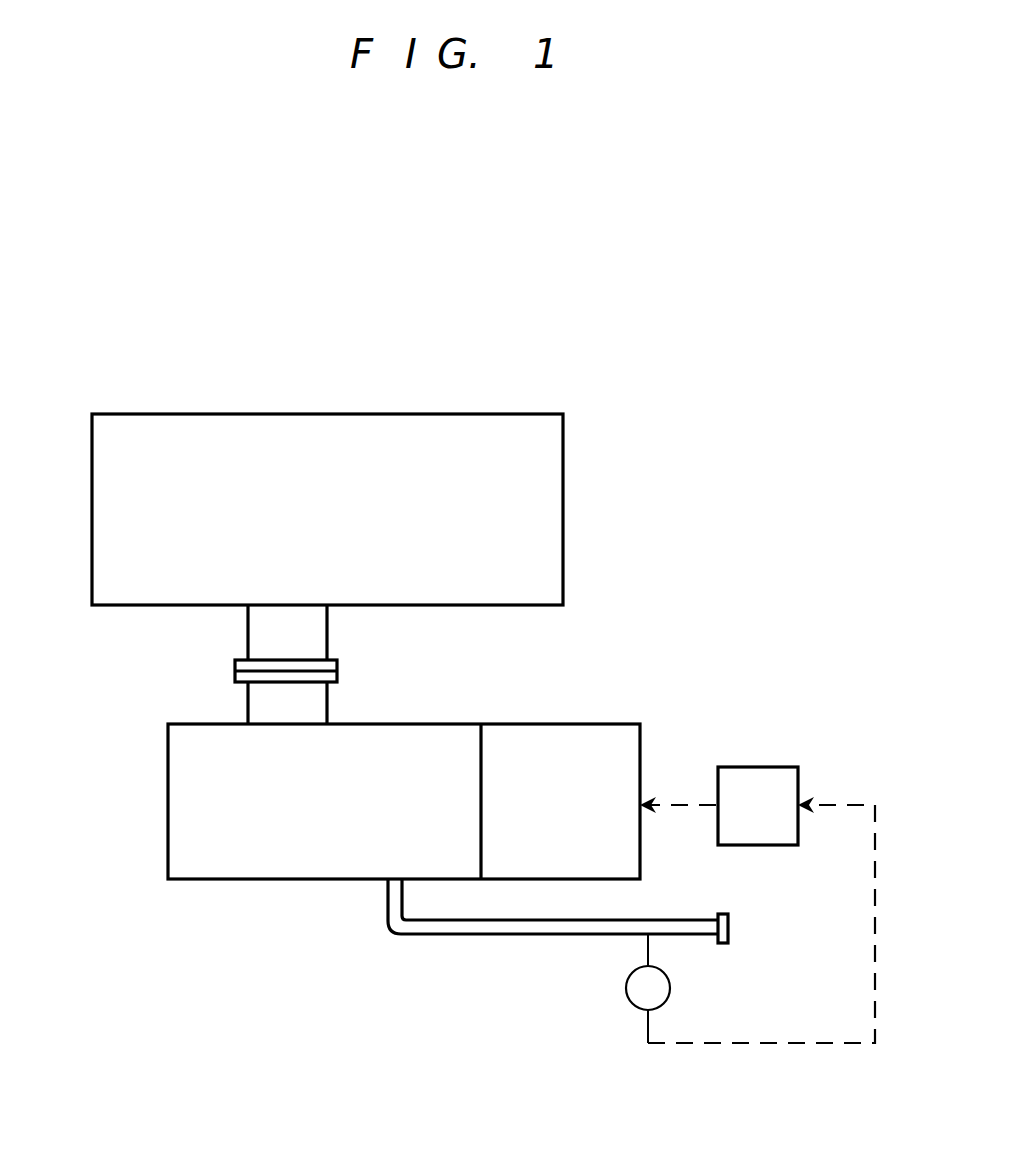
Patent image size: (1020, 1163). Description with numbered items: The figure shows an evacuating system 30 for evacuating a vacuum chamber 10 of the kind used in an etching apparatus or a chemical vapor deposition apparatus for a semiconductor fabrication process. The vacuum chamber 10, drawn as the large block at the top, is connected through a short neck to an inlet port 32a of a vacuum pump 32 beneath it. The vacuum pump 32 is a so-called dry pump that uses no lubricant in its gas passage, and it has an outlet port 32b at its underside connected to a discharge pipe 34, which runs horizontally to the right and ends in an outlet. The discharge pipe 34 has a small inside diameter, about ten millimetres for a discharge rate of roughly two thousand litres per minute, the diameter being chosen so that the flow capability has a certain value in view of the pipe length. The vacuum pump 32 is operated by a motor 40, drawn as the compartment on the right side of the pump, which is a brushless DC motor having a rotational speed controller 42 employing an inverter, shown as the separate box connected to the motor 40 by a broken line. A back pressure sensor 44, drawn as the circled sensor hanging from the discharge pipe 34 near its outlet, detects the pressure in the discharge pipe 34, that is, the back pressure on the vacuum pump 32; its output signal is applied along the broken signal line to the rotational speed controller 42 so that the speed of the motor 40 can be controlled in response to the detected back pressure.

The vacuum chamber 10 is at (563, 457).
The evacuating system 30 is at (297, 918).
The vacuum pump 32 is at (167, 848).
The inlet port 32a is at (327, 703).
The outlet port 32b is at (386, 885).
The discharge pipe 34 is at (540, 937).
The motor 40 is at (607, 727).
The rotational speed controller 42 is at (762, 767).
The back pressure sensor 44 is at (672, 990).